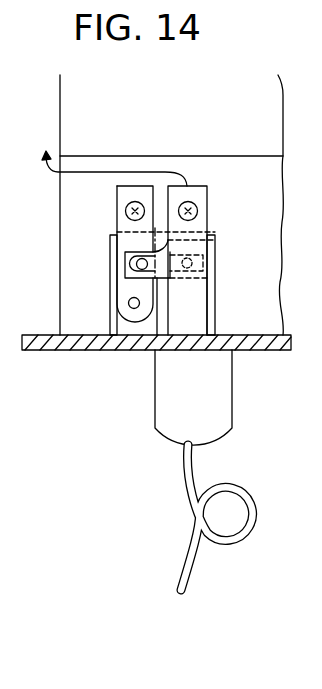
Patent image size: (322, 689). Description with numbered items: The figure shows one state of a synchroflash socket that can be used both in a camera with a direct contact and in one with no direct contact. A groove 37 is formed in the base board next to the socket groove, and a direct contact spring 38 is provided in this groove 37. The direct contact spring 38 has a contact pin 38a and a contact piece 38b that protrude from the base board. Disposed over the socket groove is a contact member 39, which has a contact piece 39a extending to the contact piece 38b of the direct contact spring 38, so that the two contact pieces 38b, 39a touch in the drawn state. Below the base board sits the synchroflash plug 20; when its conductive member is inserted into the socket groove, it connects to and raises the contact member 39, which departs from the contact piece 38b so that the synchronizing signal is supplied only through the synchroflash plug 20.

The synchroflash plug 20 is at (232, 377).
The groove 37 is at (116, 324).
The direct contact spring 38 is at (118, 222).
The contact pin 38a is at (133, 311).
The contact piece 38b is at (126, 258).
The contact member 39 is at (207, 212).
The contact piece 39a is at (133, 267).